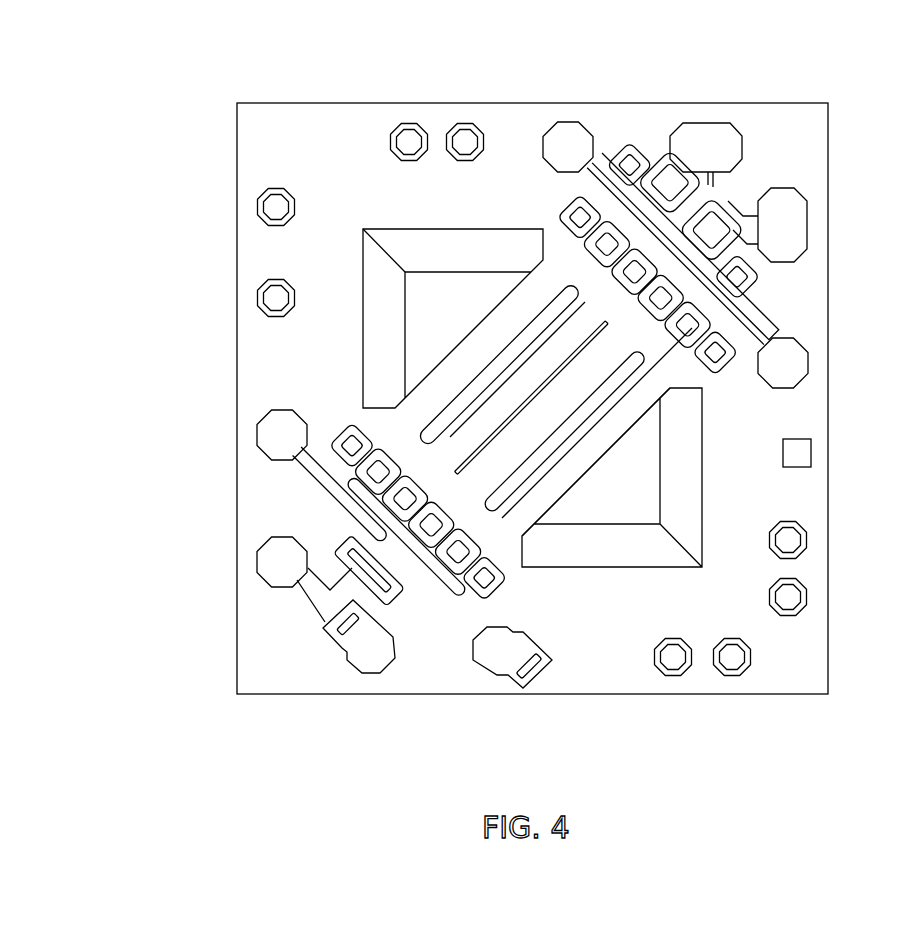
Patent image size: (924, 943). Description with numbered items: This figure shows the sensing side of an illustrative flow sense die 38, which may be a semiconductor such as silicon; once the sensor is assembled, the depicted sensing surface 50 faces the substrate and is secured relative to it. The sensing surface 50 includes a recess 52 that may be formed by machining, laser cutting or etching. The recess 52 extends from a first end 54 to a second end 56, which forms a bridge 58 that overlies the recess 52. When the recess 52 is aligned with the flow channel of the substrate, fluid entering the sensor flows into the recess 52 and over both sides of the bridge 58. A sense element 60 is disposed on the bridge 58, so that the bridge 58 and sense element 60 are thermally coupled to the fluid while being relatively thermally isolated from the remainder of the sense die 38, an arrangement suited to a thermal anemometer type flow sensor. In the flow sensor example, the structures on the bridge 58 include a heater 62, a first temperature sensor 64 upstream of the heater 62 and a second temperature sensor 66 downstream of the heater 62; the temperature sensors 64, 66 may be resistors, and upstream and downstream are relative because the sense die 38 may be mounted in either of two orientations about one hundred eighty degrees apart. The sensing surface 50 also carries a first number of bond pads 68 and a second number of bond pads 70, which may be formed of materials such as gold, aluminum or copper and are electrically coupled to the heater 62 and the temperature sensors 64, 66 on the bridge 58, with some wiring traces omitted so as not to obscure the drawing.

The sense die 38 is at (212, 85).
The sensing surface 50 is at (802, 662).
The recess 52 is at (415, 315).
The first end 54 is at (420, 233).
The second end 56 is at (680, 547).
The bridge 58 is at (672, 352).
The sense element 60 is at (632, 445).
The heater 62 is at (567, 355).
The first temperature sensor 64 is at (430, 413).
The second temperature sensor 66 is at (533, 487).
The first number of bond pads 68 is at (272, 434).
The second number of bond pads 70 is at (567, 140).